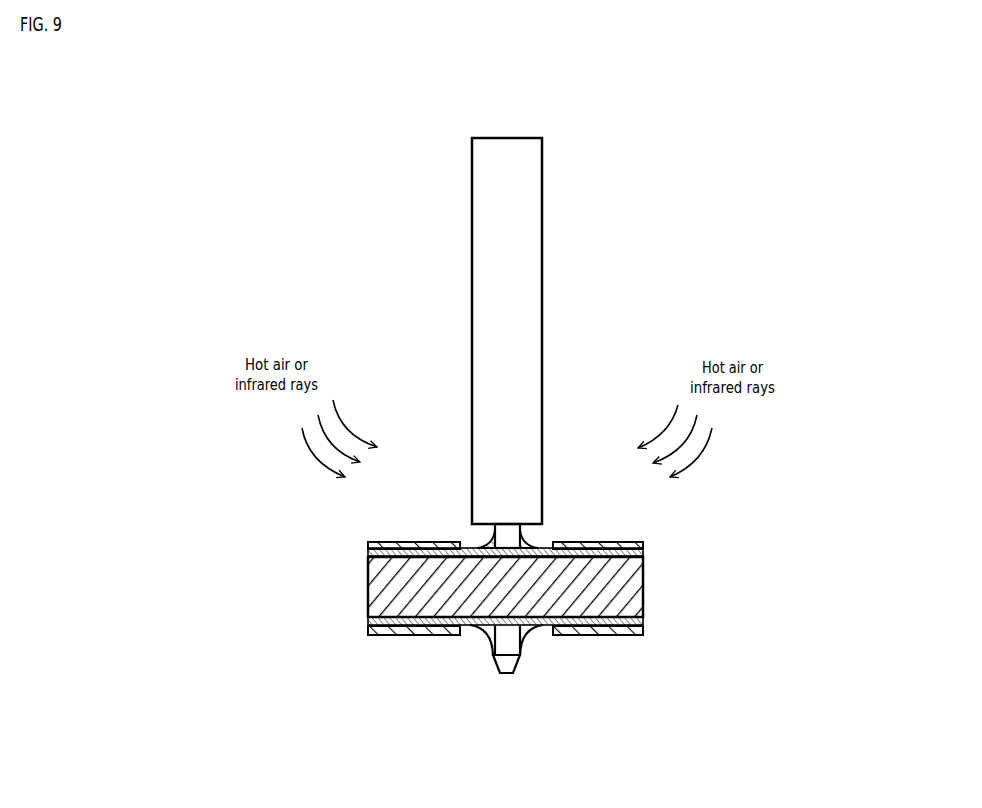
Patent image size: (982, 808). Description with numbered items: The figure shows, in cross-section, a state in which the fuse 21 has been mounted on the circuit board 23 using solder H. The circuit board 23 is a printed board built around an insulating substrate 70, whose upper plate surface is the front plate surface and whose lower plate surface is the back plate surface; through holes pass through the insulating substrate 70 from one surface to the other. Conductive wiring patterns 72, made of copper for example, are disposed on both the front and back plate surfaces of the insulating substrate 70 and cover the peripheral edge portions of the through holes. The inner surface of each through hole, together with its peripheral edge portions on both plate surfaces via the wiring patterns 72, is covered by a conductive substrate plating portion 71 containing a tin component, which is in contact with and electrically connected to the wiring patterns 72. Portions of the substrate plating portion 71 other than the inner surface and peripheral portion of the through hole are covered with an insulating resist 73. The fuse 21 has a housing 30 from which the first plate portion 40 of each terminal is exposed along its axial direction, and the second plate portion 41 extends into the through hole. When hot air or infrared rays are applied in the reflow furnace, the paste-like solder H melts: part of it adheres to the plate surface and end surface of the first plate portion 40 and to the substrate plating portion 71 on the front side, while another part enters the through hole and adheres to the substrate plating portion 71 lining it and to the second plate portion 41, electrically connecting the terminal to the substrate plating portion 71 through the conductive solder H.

The fuse 21 is at (565, 130).
The housing 30 is at (543, 205).
The first plate portion 40 is at (505, 530).
The second plate portion 41 is at (508, 673).
The circuit board 23 is at (558, 687).
The insulating substrate 70 is at (600, 603).
The wiring pattern 72 is at (642, 553).
The resist 73 is at (393, 542).
The substrate plating portion 71 is at (445, 545).
The solder H is at (478, 545).